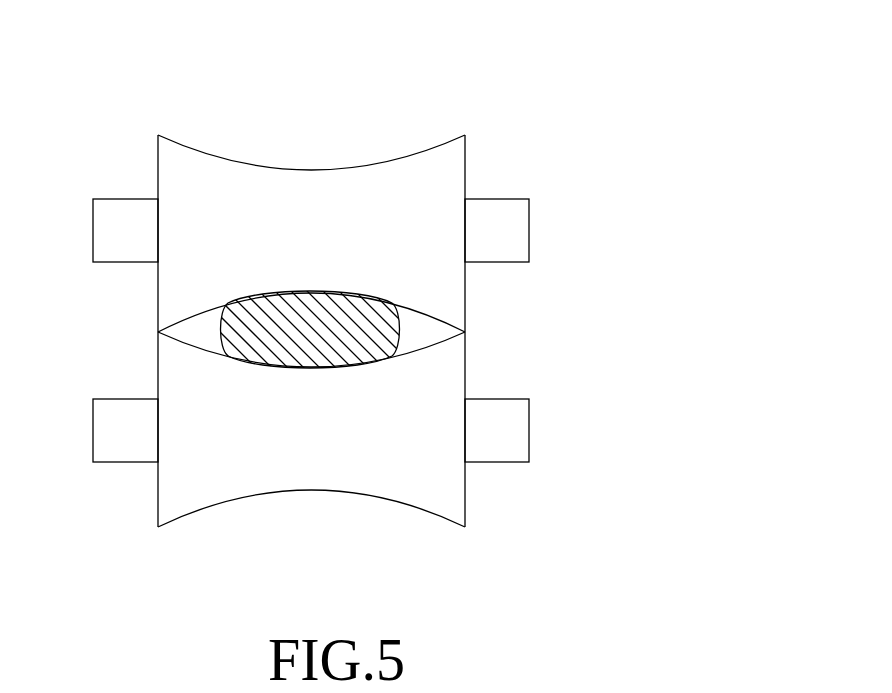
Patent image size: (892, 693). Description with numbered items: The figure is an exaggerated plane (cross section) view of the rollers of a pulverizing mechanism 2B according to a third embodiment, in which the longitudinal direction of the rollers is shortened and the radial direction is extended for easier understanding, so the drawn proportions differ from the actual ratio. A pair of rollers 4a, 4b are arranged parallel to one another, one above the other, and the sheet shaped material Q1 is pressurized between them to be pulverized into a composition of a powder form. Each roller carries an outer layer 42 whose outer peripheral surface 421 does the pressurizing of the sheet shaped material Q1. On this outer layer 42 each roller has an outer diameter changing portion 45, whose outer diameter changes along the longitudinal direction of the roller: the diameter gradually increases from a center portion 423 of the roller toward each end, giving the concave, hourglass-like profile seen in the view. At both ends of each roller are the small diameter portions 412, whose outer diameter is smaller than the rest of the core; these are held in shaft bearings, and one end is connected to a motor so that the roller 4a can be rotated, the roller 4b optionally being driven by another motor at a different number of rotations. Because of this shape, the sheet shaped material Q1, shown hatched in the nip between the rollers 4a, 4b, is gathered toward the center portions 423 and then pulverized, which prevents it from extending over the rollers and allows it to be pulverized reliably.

The pulverizing mechanism 2B is at (320, 306).
The roller 4a is at (469, 157).
The roller 4b is at (471, 498).
The outer layer 42 is at (220, 154).
The center portion 423 is at (315, 170).
The outer diameter changing portion 45 is at (429, 334).
The outer peripheral surface 421 is at (366, 199).
The small diameter portion 412 is at (117, 199).
The sheet shaped material Q1 is at (360, 327).